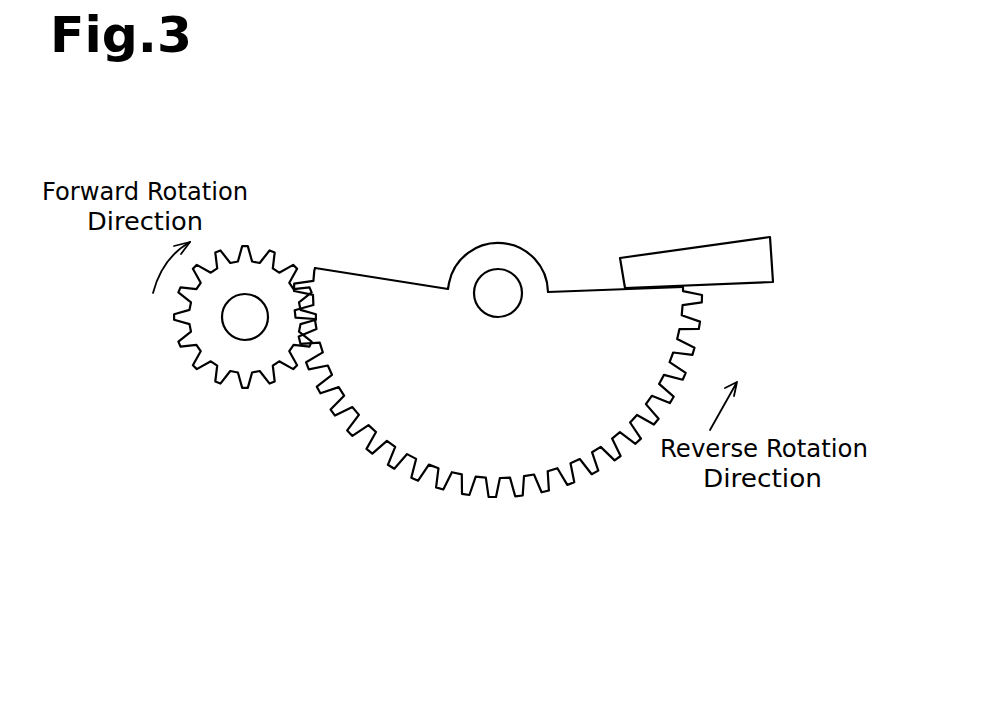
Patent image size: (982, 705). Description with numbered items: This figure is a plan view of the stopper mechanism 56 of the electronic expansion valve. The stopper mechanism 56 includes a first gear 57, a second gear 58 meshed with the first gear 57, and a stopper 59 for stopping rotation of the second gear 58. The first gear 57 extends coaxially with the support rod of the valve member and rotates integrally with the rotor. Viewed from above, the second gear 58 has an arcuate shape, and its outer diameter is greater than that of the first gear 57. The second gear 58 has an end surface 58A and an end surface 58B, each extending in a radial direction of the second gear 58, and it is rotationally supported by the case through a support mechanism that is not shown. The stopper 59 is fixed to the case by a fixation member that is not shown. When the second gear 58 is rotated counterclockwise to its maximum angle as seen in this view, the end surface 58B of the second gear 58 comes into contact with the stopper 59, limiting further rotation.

The stopper mechanism 56 is at (488, 193).
The first gear 57 is at (235, 360).
The second gear 58 is at (380, 422).
The end surface 58A is at (371, 273).
The end surface 58B is at (583, 290).
The stopper 59 is at (705, 258).